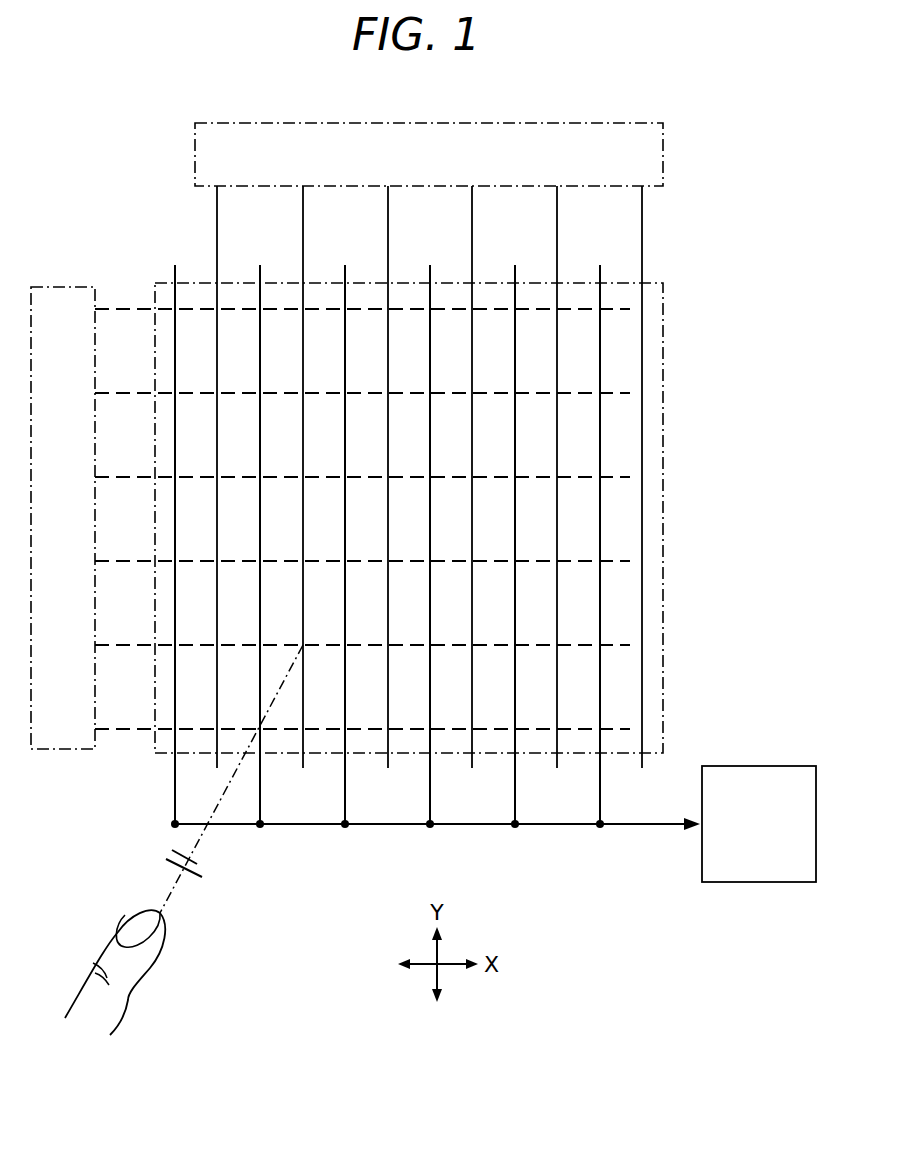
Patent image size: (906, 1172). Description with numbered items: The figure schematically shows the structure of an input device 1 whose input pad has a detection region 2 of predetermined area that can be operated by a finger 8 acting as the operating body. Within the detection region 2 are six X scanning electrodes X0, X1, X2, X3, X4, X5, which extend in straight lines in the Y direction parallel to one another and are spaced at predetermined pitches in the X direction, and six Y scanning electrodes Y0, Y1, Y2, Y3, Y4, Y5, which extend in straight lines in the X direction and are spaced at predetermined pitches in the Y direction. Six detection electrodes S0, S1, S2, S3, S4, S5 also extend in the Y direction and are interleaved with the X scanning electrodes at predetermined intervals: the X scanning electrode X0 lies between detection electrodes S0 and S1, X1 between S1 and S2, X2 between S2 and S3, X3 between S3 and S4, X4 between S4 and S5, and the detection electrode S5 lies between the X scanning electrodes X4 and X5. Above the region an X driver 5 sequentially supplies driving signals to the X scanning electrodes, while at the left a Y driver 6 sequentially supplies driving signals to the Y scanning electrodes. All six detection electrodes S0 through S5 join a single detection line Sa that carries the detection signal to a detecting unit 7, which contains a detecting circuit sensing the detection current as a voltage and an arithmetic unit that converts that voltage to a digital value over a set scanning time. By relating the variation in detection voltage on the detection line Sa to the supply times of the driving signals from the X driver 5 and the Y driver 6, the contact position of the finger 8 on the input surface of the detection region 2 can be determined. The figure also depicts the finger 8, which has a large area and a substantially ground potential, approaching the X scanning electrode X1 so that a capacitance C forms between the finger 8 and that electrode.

The input device 1 is at (153, 208).
The detection region 2 is at (690, 400).
The X driver 5 is at (297, 122).
The Y driver 6 is at (62, 750).
The detecting unit 7 is at (750, 765).
The finger 8 is at (157, 948).
The capacitance C is at (231, 779).
The detection line Sa is at (585, 828).
The X scanning electrode X0 is at (234, 477).
The X scanning electrode X1 is at (320, 477).
The X scanning electrode X2 is at (405, 477).
The X scanning electrode X3 is at (490, 477).
The X scanning electrode X4 is at (575, 477).
The X scanning electrode X5 is at (661, 477).
The Y scanning electrode Y0 is at (362, 708).
The Y scanning electrode Y1 is at (362, 624).
The Y scanning electrode Y2 is at (362, 540).
The Y scanning electrode Y3 is at (362, 456).
The Y scanning electrode Y4 is at (362, 372).
The Y scanning electrode Y5 is at (362, 288).
The detection electrode S0 is at (190, 546).
The detection electrode S1 is at (275, 546).
The detection electrode S2 is at (360, 546).
The detection electrode S3 is at (445, 546).
The detection electrode S4 is at (530, 546).
The detection electrode S5 is at (615, 546).